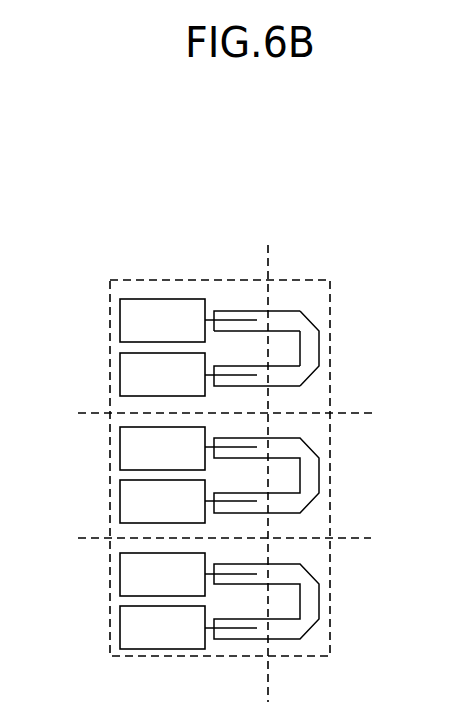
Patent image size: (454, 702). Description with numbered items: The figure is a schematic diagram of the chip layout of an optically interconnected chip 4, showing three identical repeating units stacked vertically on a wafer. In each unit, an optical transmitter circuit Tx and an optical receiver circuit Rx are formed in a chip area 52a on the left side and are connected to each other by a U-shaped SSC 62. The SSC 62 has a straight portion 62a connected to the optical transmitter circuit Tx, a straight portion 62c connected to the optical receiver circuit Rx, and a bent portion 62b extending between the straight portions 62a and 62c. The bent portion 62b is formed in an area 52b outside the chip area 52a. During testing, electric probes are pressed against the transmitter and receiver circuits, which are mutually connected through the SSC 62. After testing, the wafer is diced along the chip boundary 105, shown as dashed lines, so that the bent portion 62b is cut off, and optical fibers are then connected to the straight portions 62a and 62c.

The optically interconnected chip 4 is at (108, 232).
The chip area 52a is at (188, 291).
The area outside the chip area 52b is at (305, 291).
The U-shaped SSC 62 is at (329, 347).
The straight portion 62a is at (237, 317).
The bent portion 62b is at (310, 350).
The straight portion 62c is at (300, 388).
The chip boundary 105 is at (355, 537).